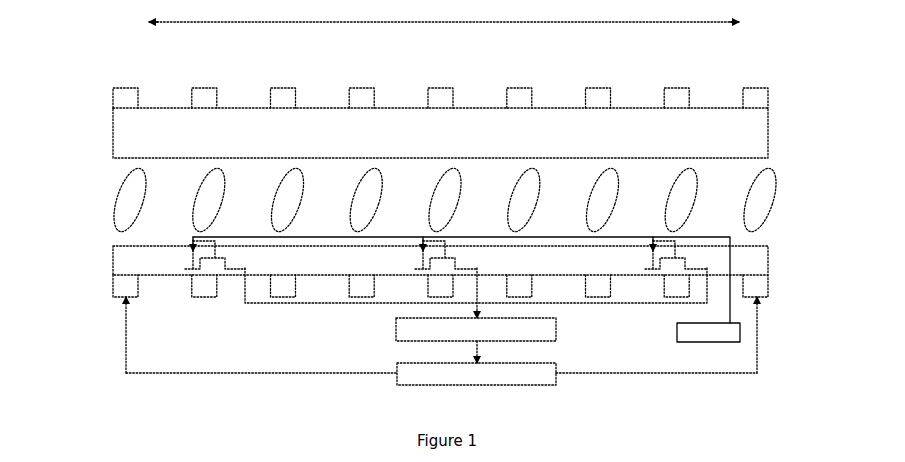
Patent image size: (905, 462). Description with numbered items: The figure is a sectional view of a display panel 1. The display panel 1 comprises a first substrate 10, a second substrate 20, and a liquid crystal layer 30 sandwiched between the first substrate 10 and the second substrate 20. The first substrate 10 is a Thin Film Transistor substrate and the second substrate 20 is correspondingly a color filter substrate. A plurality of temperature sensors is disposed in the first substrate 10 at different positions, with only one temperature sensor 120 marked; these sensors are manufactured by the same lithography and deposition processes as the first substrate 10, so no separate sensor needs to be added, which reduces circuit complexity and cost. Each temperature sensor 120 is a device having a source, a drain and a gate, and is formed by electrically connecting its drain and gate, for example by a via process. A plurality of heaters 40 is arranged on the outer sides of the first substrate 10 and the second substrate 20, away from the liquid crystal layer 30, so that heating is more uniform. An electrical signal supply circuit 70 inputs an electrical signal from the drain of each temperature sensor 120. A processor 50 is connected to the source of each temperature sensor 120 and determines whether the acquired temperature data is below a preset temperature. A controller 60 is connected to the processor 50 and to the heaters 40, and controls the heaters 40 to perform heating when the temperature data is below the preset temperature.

The display panel 1 is at (95, 58).
The first substrate 10 is at (768, 262).
The second substrate 20 is at (768, 135).
The liquid crystal layer 30 is at (771, 206).
The heaters 40 is at (768, 99).
The processor 50 is at (556, 326).
The controller 60 is at (556, 369).
The electrical signal supply circuit 70 is at (677, 325).
The temperature sensor 120 is at (188, 249).